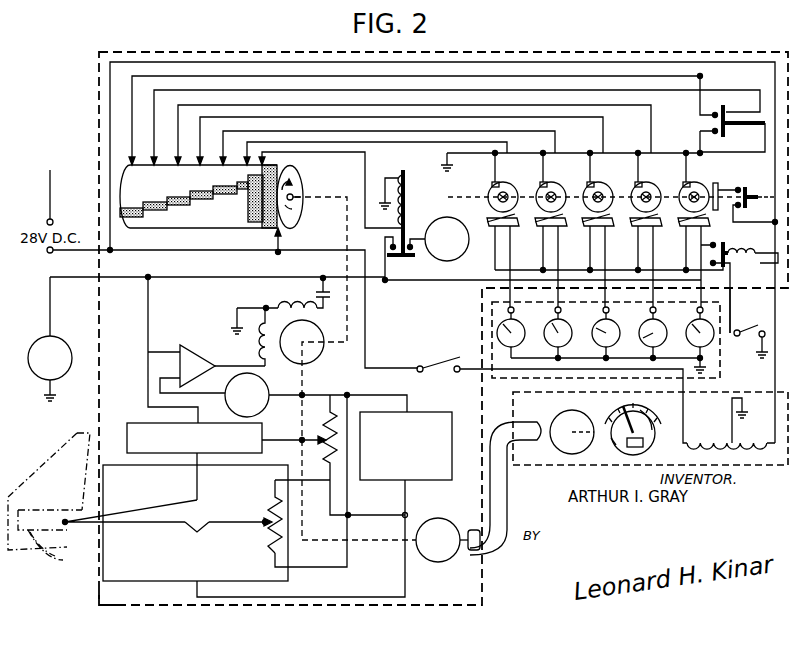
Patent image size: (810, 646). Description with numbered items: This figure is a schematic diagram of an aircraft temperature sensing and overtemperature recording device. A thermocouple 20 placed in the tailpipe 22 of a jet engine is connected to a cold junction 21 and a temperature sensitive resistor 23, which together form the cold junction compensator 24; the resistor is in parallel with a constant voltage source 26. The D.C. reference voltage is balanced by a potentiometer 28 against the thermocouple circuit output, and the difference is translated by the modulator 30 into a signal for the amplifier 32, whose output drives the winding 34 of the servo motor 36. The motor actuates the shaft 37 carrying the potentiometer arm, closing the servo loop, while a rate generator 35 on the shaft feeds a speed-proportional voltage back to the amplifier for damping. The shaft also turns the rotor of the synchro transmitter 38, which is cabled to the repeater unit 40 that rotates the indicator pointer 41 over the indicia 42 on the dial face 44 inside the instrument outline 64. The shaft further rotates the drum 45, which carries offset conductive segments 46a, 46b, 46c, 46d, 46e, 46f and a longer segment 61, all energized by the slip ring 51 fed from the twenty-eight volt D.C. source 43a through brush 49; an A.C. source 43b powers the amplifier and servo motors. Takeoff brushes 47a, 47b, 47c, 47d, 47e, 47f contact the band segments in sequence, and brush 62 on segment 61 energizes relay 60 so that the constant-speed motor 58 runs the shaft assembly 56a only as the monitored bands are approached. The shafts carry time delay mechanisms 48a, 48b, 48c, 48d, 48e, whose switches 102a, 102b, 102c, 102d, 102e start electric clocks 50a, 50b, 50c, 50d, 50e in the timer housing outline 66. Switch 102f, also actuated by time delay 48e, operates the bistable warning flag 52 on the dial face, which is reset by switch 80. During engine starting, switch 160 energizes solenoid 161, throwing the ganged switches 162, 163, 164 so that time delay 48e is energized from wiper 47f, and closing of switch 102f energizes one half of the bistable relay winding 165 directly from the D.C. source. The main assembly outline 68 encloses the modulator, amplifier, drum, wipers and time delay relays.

The thermocouple 20 is at (67, 526).
The cold junction 21 is at (198, 530).
The tailpipe 22 is at (55, 560).
The temperature sensitive resistor 23 is at (262, 522).
The cold junction compensator 24 is at (283, 581).
The constant voltage source 26 is at (420, 481).
The potentiometer 28 is at (325, 450).
The modulator 30 is at (134, 423).
The amplifier 32 is at (193, 347).
The winding 34 is at (258, 338).
The rate generator 35 is at (264, 409).
The servo motor 36 is at (318, 353).
The shaft 37 is at (346, 232).
The synchro transmitter 38 is at (432, 562).
The repeater unit 40 is at (562, 414).
The indicator pointer 41 is at (610, 425).
The indicia 42 is at (652, 412).
The 28 volt D.C. source 43a is at (53, 252).
The 115 volt 400 cycle A.C. source 43b is at (70, 335).
The dial face 44 is at (613, 447).
The drum 45 is at (162, 232).
The conductive segment 46a is at (242, 189).
The conductive segment 46b is at (227, 194).
The conductive segment 46c is at (205, 191).
The conductive segment 46d is at (178, 197).
The conductive segment 46e is at (155, 202).
The conductive segment 46f is at (131, 208).
The takeoff brush 47a is at (247, 157).
The takeoff brush 47b is at (223, 154).
The takeoff brush 47c is at (200, 150).
The takeoff brush 47d is at (178, 146).
The takeoff brush 47e is at (154, 142).
The takeoff brush 47f is at (132, 140).
The time delay mechanism 48a is at (510, 187).
The time delay mechanism 48b is at (558, 187).
The time delay mechanism 48c is at (605, 187).
The time delay mechanism 48d is at (653, 187).
The time delay mechanism 48e is at (703, 187).
The brush 49 is at (282, 246).
The electric clock 50a is at (523, 330).
The electric clock 50b is at (570, 330).
The electric clock 50c is at (618, 330).
The electric clock 50d is at (665, 330).
The electric clock 50e is at (690, 346).
The slip ring 51 is at (298, 180).
The warning flag 52 is at (644, 446).
The assembly of shafts 56a is at (457, 172).
The constant-speed motor 58 is at (456, 255).
The relay 60 is at (412, 178).
The segment 61 is at (257, 224).
The brush 62 is at (305, 165).
The outline of indicating instrument 64 is at (558, 470).
The timer housing outline 66 is at (512, 381).
The main assembly outline 68 is at (94, 605).
The switch 80 is at (444, 362).
The switch 102a is at (520, 226).
The switch 102b is at (540, 232).
The switch 102c is at (587, 232).
The switch 102d is at (635, 232).
The switch 102e is at (683, 232).
The switch 102f is at (748, 127).
The switch 160 is at (750, 345).
The solenoid 161 is at (748, 258).
The ganged double pole-double throw switch 162 is at (733, 300).
The ganged double pole-double throw switch 163 is at (757, 186).
The ganged double pole-double throw switch 164 is at (752, 106).
The bistable relay winding 165 is at (718, 440).